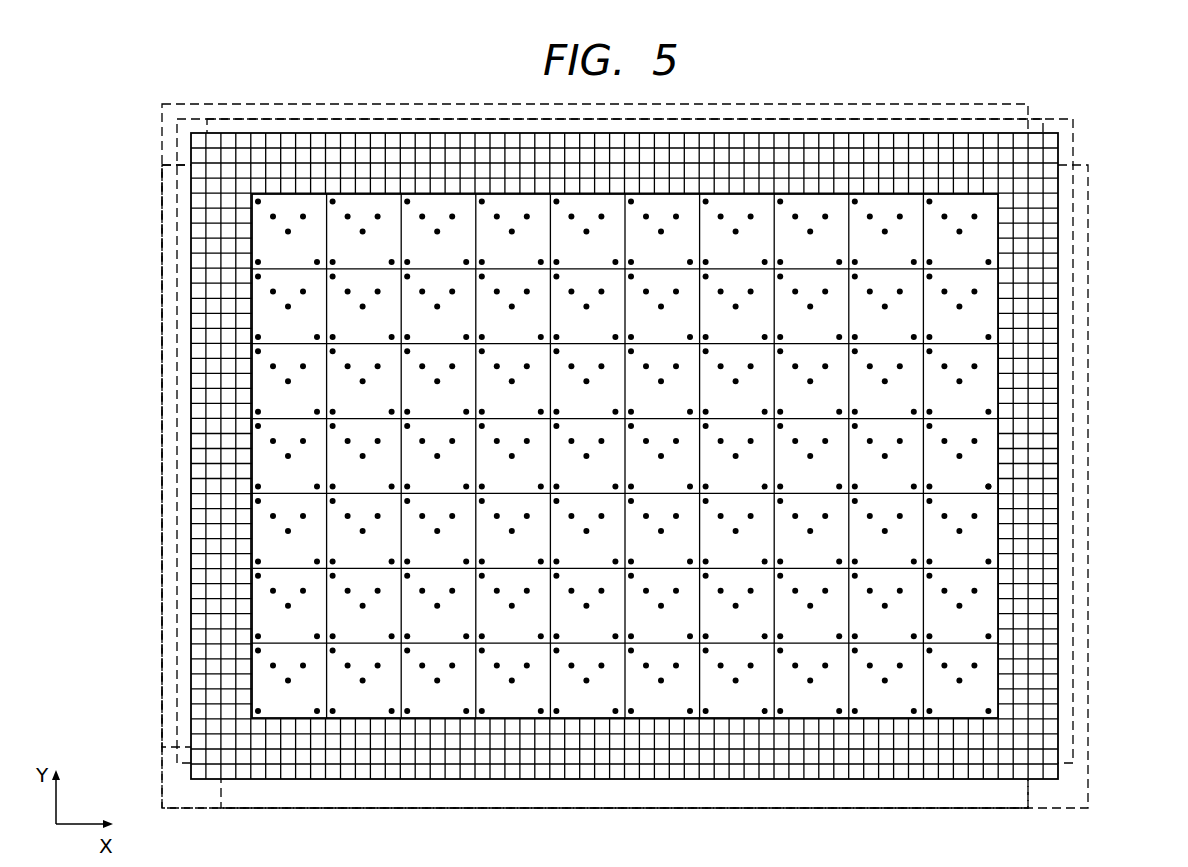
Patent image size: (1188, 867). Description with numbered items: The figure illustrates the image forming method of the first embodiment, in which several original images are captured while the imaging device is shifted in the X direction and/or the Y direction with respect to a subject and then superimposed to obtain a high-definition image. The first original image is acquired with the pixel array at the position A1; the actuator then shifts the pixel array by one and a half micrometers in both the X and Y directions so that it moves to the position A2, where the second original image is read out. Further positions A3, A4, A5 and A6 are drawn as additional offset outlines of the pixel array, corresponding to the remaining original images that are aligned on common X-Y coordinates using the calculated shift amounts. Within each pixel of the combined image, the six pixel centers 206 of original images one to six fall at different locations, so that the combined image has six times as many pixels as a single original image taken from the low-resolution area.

The pixel center 206 is at (988, 487).
The position A1 is at (1058, 695).
The position A2 is at (1073, 741).
The area A3 is at (1088, 787).
The area A4 is at (177, 653).
The area A5 is at (162, 710).
The area A6 is at (162, 763).